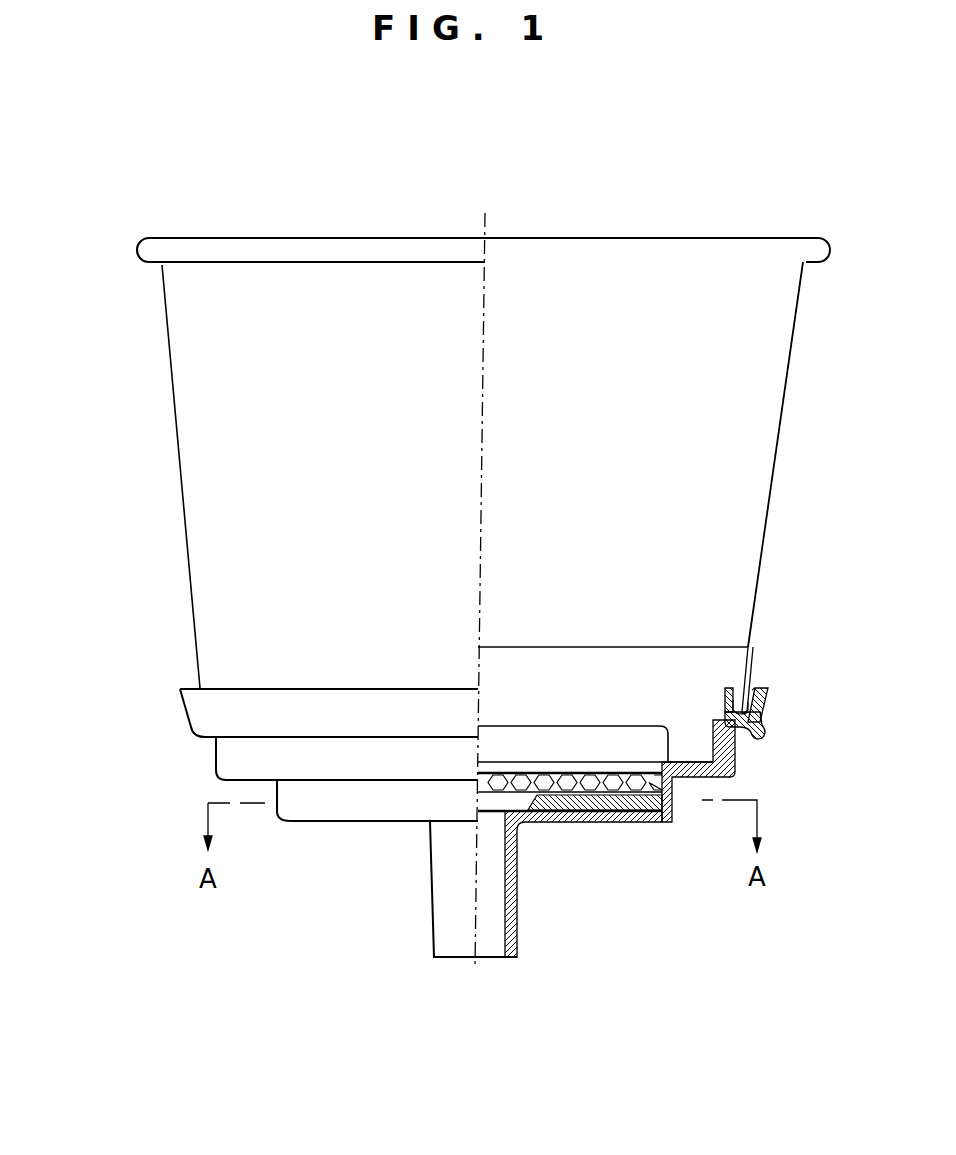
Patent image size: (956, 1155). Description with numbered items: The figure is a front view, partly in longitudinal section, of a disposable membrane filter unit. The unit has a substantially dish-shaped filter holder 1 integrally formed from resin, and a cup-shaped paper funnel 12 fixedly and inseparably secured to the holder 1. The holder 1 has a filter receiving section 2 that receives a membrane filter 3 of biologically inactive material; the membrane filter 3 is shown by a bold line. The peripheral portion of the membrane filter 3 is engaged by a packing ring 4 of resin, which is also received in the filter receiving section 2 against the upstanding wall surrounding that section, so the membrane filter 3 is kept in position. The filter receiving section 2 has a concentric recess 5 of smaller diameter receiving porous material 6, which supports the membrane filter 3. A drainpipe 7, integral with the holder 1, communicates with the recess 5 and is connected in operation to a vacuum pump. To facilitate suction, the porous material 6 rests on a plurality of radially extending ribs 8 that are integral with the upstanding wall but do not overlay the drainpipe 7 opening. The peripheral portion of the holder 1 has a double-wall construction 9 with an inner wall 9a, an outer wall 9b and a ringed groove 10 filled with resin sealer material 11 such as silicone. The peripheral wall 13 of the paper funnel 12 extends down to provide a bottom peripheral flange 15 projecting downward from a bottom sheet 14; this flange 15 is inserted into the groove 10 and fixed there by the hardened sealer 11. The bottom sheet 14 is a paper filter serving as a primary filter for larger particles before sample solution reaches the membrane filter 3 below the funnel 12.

The filter holder 1 is at (200, 745).
The filter receiving section 2 is at (617, 736).
The membrane filter 3 is at (515, 768).
The packing ring 4 is at (738, 761).
The concentric recess 5 is at (553, 764).
The porous material 6 is at (593, 814).
The drainpipe 7 is at (455, 935).
The ribs 8 is at (556, 823).
The double-wall construction 9 is at (764, 733).
The inner wall 9a is at (726, 697).
The outer wall 9b is at (770, 700).
The ringed groove 10 is at (758, 680).
The resin sealer material 11 is at (742, 704).
The paper funnel 12 is at (177, 468).
The peripheral wall 13 is at (782, 435).
The bottom sheet 14 is at (682, 647).
The bottom peripheral flange 15 is at (740, 688).